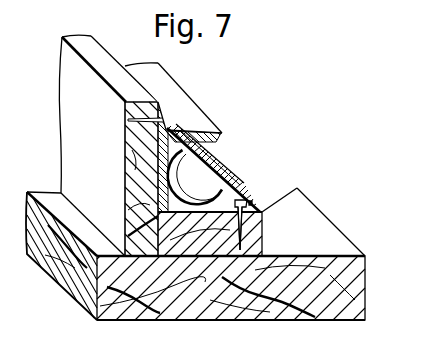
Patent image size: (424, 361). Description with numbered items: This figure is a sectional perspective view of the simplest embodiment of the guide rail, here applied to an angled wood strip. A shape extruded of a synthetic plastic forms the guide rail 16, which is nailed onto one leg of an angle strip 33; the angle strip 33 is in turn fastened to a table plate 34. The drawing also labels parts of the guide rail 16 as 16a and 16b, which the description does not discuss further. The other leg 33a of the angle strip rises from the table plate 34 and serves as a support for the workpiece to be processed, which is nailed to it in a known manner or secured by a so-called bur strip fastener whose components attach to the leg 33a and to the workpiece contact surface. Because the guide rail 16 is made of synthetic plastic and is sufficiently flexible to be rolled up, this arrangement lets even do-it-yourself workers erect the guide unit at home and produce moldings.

The guide rail 16 is at (188, 115).
The spring tongue of cover plate 16a is at (228, 181).
The lip of cover plate 16b is at (210, 150).
The angle strip 33 is at (255, 227).
The other leg of the angle strip 33a is at (82, 127).
The table plate 34 is at (97, 302).